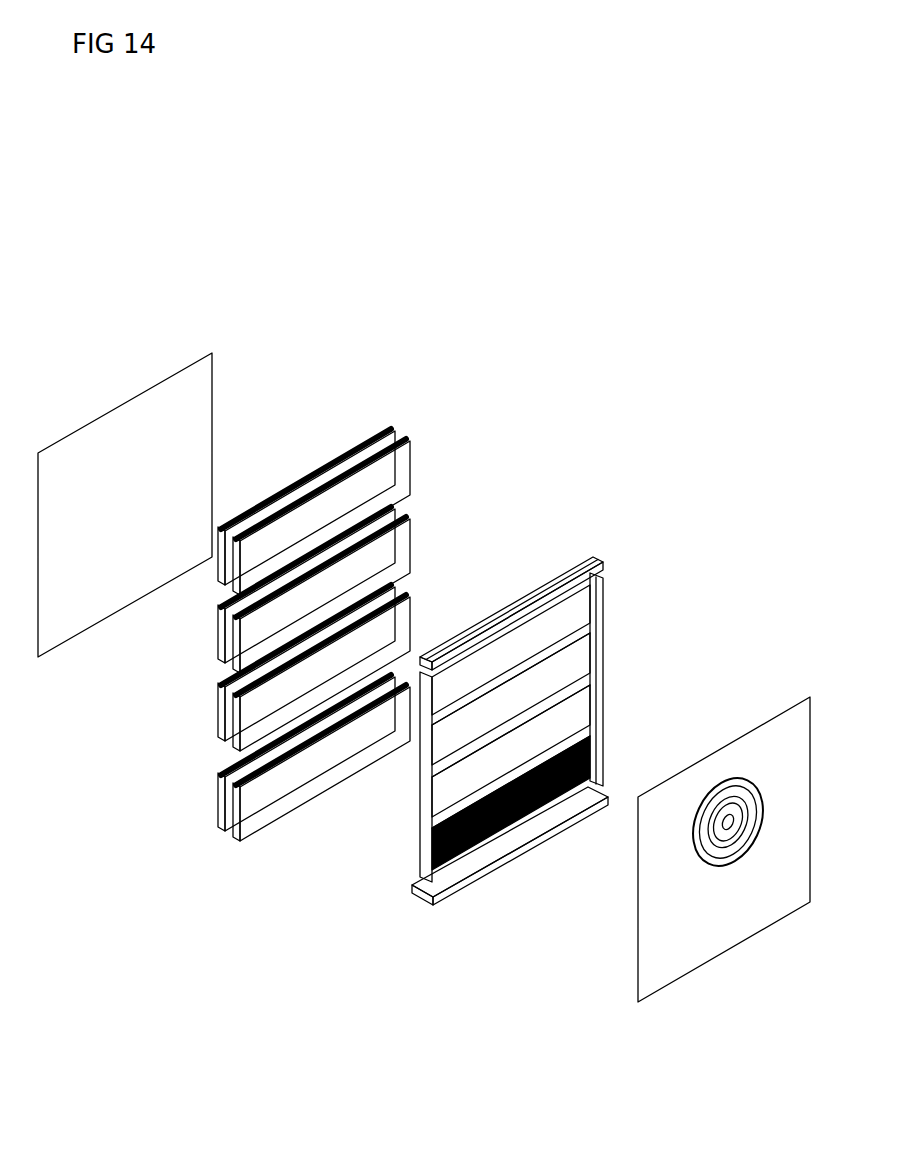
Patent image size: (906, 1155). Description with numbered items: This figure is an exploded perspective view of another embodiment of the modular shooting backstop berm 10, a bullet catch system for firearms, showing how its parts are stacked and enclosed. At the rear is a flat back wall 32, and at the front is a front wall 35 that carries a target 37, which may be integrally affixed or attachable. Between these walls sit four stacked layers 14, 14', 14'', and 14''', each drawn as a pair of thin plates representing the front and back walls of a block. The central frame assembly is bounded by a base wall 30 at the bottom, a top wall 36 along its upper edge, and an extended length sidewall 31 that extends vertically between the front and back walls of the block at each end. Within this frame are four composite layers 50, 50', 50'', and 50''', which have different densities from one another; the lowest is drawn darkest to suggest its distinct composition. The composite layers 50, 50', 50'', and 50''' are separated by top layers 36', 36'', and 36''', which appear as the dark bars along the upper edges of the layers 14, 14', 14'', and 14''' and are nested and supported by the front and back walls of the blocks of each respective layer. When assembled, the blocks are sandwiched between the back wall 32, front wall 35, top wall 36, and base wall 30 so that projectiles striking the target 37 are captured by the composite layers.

The modular shooting backstop berm 10 is at (132, 226).
The layer 14 is at (350, 512).
The layer 14' is at (309, 587).
The layer 14'' is at (305, 663).
The layer 14''' is at (267, 758).
The base wall 30 is at (532, 848).
The extended length sidewall 31 is at (602, 567).
The back wall 32 is at (212, 388).
The front wall 35 is at (685, 849).
The top wall 36 is at (511, 599).
The top layer 36' is at (352, 554).
The top layer 36'' is at (351, 630).
The top layer 36''' is at (258, 732).
The target 37 is at (733, 858).
The composite layer 50 is at (544, 650).
The composite layer 50' is at (546, 699).
The composite layer 50'' is at (547, 751).
The composite layer 50''' is at (550, 803).